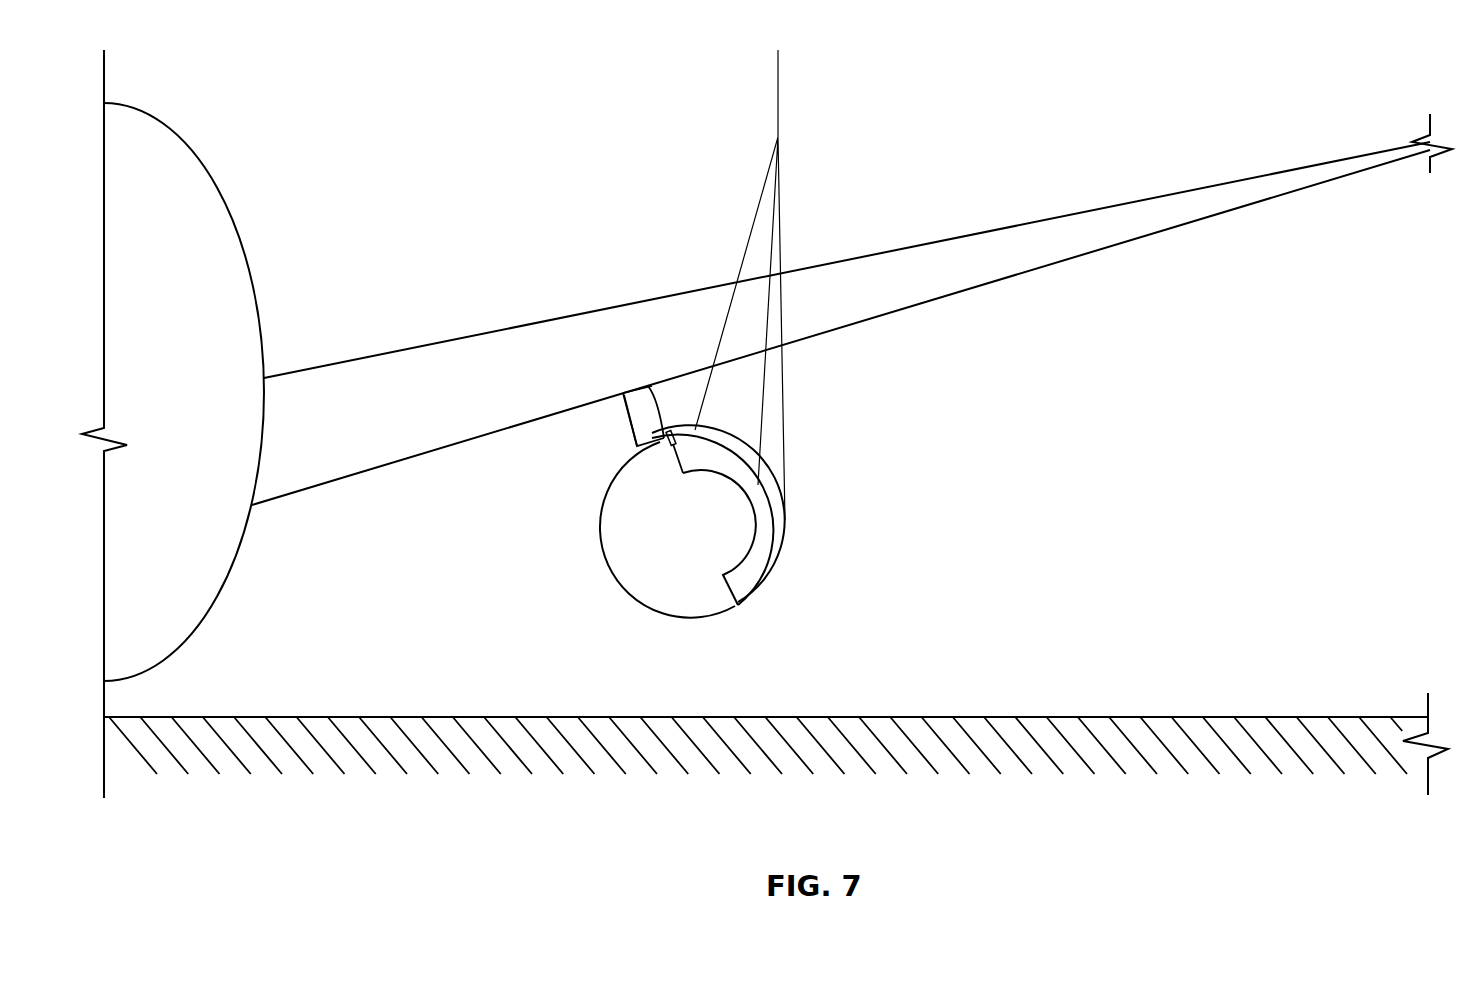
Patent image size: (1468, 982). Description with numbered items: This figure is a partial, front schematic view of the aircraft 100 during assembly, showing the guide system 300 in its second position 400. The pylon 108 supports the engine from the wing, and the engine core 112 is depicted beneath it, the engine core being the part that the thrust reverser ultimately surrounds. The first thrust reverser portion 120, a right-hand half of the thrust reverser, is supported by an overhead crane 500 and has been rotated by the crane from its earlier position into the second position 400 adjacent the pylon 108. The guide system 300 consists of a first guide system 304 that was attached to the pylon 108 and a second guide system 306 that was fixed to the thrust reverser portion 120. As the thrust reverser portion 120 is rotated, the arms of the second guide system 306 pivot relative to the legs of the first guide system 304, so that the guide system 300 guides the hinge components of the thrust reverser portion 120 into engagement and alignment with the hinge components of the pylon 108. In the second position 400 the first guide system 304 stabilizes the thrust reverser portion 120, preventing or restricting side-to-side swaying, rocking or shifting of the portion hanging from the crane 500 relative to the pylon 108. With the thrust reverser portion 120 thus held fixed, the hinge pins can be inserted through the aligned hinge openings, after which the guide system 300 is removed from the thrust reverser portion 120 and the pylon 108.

The aircraft 100 is at (318, 72).
The crane 500 is at (753, 220).
The guide system 300 is at (668, 368).
The first guide system 304 is at (646, 394).
The pylon 108 is at (638, 432).
The second guide system 306 is at (664, 442).
The second position 400 is at (662, 543).
The engine core 112 is at (618, 608).
The first thrust reverser portion 120 is at (787, 555).